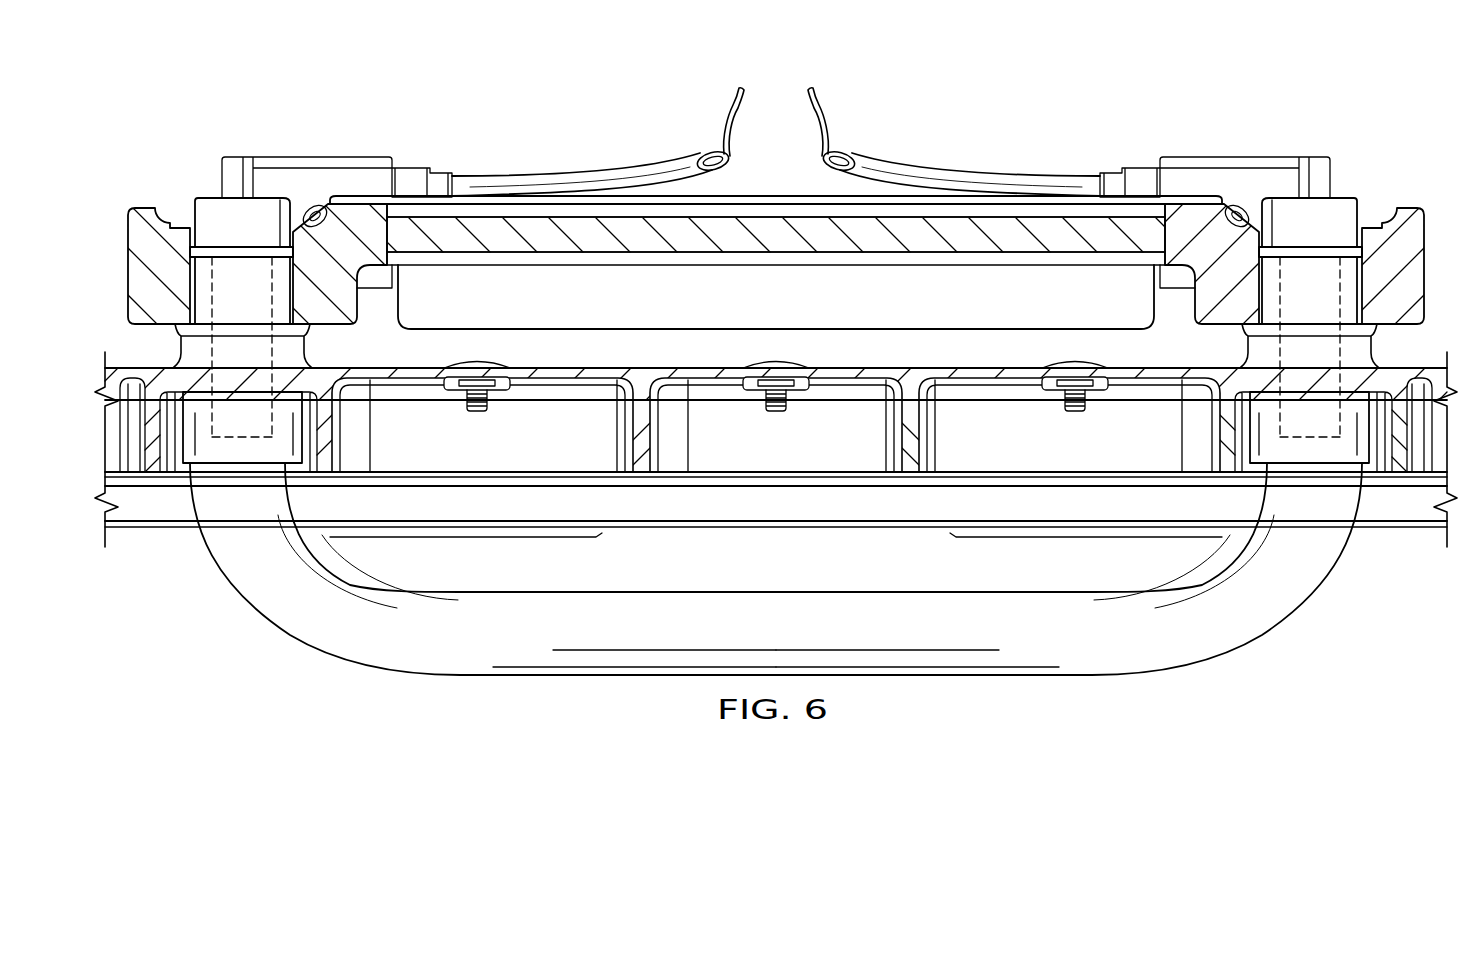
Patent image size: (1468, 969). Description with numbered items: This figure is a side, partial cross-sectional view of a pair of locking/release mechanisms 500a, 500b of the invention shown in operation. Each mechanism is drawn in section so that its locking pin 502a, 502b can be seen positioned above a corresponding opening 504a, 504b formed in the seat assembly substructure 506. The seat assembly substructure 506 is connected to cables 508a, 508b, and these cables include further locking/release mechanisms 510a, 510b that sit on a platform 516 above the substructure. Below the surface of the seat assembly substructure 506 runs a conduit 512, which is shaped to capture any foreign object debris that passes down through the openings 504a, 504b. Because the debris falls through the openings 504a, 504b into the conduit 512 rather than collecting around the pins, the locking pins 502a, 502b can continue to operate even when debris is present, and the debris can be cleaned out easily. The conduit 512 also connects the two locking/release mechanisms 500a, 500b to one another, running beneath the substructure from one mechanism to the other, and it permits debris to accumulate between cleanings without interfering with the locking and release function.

The locking/release mechanism 500a is at (238, 111).
The locking/release mechanism 500b is at (1314, 111).
The locking pin 502a is at (1293, 440).
The locking pin 502b is at (257, 440).
The opening 504a is at (1248, 441).
The opening 504b is at (303, 420).
The seat assembly substructure 506 is at (593, 378).
The cable 508a is at (950, 168).
The cable 508b is at (602, 168).
The locking/release mechanism 510a is at (1248, 156).
The locking/release mechanism 510b is at (304, 156).
The conduit 512 is at (447, 677).
The platform 516 is at (765, 195).